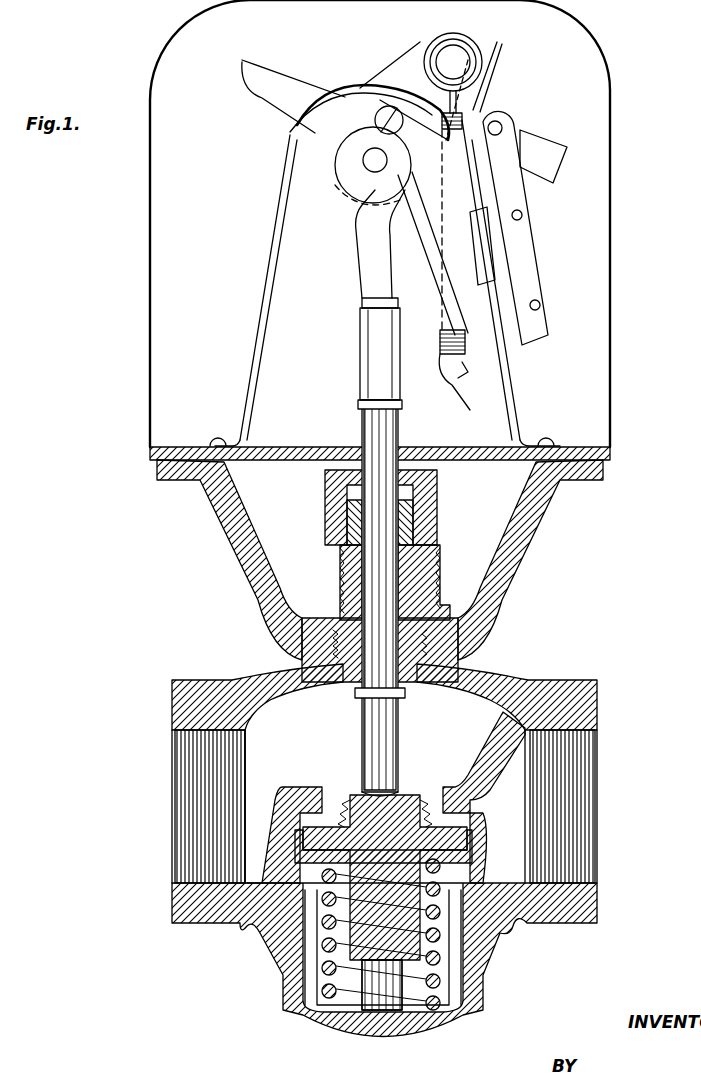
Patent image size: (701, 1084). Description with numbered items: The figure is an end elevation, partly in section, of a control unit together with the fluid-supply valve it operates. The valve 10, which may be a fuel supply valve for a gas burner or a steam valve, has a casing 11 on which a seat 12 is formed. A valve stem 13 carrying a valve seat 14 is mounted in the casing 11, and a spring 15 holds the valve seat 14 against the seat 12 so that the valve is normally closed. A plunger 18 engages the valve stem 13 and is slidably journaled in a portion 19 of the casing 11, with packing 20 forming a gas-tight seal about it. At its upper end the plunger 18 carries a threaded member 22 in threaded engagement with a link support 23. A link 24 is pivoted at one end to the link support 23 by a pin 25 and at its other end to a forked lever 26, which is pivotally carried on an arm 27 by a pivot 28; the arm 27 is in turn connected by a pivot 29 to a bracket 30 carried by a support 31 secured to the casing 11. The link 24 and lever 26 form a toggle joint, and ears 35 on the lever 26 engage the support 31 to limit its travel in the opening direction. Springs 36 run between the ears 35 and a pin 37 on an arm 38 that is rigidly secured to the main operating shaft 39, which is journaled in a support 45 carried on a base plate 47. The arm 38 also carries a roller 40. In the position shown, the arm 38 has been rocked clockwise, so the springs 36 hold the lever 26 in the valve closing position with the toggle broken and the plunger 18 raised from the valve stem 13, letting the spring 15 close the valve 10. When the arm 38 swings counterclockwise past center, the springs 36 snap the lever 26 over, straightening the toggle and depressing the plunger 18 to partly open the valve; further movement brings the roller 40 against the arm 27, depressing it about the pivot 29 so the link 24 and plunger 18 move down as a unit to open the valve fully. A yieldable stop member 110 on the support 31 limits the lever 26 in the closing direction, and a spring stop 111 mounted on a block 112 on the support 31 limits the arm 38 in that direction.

The valve 10 is at (582, 697).
The casing 11 is at (279, 690).
The seat 12 is at (458, 818).
The valve stem 13 is at (422, 880).
The valve seat 14 is at (464, 850).
The spring 15 is at (440, 935).
The plunger 18 is at (392, 578).
The portion of the casing 19 is at (340, 566).
The packing 20 is at (434, 528).
The threaded member 22 is at (364, 380).
The link support 23 is at (358, 337).
The link 24 is at (360, 268).
The pin 25 is at (384, 300).
The forked lever 26 is at (422, 246).
The arm 27 is at (322, 130).
The pivot 28 is at (403, 120).
The pivot 29 is at (500, 124).
The bracket 30 is at (524, 237).
The support 31 is at (514, 383).
The ears 35 is at (458, 400).
The springs 36 is at (466, 338).
The pin 37 is at (455, 58).
The arm 38 is at (407, 77).
The main operating shaft 39 is at (368, 168).
The roller 40 is at (478, 45).
The support 45 is at (605, 243).
The base plate 47 is at (150, 452).
The stop member 110 is at (490, 278).
The spring stop 111 is at (492, 66).
The block 112 is at (547, 152).